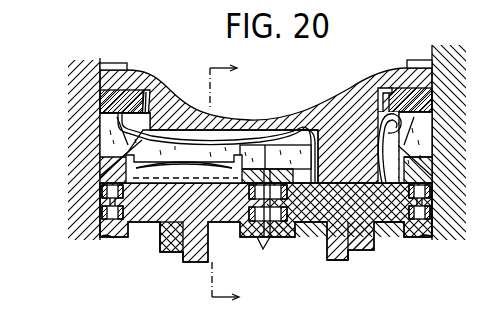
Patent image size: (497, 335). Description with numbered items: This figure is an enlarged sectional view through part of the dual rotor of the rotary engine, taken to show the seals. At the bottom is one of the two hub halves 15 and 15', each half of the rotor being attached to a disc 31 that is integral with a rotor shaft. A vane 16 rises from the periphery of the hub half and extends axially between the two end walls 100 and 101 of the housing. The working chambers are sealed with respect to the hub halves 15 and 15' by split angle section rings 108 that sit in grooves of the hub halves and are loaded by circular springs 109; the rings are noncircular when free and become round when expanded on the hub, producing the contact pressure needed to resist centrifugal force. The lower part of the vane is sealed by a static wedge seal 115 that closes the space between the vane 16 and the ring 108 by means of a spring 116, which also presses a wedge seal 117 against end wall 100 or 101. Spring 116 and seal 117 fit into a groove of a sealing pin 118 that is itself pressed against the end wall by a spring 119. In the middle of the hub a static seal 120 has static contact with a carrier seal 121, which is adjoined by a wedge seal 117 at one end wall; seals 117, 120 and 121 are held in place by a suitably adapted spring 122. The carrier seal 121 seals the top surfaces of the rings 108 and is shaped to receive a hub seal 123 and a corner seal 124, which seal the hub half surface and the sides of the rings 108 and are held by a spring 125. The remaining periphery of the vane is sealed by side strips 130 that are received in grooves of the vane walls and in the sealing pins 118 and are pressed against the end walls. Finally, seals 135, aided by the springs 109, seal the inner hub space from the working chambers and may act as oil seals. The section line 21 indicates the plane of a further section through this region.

The hub half 15 is at (389, 245).
The hub half 15' is at (158, 249).
The vane 16 is at (396, 75).
The section line 21 is at (225, 195).
The disc 31 is at (356, 254).
The end wall 100 is at (432, 50).
The end wall 101 is at (102, 62).
The split angle section ring 108 is at (104, 178).
The circular spring 109 is at (103, 214).
The static wedge seal 115 is at (413, 163).
The spring 116 is at (388, 141).
The wedge seal 117 is at (103, 125).
The sealing pin 118 is at (105, 98).
The spring 119 is at (148, 95).
The static seal 120 is at (312, 161).
The carrier seal 121 is at (262, 150).
The spring 122 is at (228, 148).
The hub seal 123 is at (176, 178).
The corner seal 124 is at (118, 151).
The spring 125 is at (184, 155).
The side strip 130 is at (103, 64).
The seal 135 is at (108, 240).